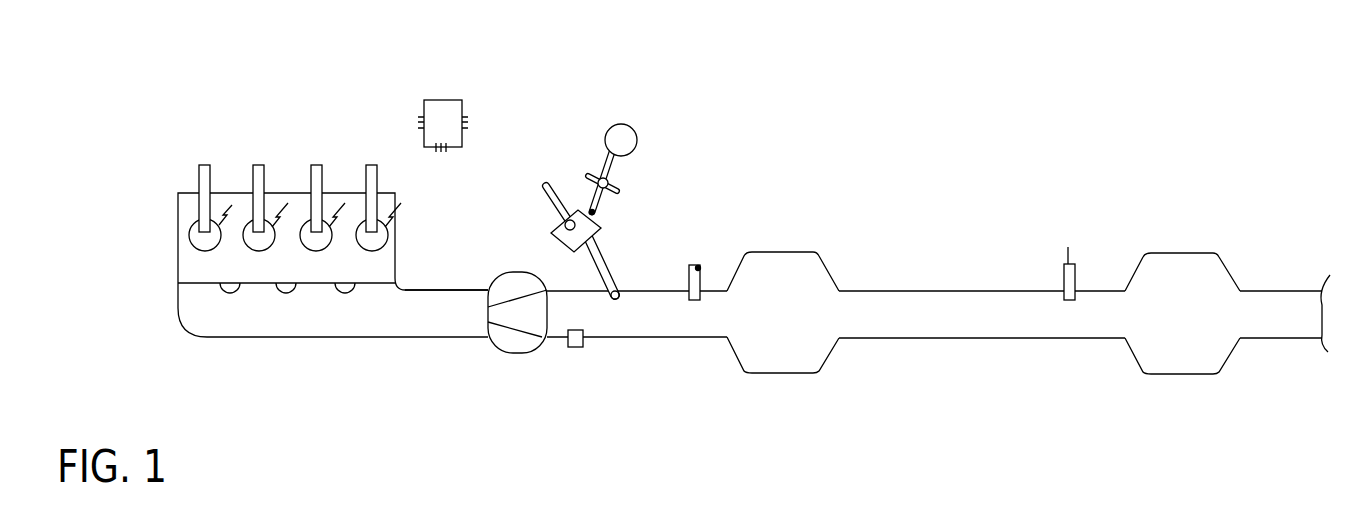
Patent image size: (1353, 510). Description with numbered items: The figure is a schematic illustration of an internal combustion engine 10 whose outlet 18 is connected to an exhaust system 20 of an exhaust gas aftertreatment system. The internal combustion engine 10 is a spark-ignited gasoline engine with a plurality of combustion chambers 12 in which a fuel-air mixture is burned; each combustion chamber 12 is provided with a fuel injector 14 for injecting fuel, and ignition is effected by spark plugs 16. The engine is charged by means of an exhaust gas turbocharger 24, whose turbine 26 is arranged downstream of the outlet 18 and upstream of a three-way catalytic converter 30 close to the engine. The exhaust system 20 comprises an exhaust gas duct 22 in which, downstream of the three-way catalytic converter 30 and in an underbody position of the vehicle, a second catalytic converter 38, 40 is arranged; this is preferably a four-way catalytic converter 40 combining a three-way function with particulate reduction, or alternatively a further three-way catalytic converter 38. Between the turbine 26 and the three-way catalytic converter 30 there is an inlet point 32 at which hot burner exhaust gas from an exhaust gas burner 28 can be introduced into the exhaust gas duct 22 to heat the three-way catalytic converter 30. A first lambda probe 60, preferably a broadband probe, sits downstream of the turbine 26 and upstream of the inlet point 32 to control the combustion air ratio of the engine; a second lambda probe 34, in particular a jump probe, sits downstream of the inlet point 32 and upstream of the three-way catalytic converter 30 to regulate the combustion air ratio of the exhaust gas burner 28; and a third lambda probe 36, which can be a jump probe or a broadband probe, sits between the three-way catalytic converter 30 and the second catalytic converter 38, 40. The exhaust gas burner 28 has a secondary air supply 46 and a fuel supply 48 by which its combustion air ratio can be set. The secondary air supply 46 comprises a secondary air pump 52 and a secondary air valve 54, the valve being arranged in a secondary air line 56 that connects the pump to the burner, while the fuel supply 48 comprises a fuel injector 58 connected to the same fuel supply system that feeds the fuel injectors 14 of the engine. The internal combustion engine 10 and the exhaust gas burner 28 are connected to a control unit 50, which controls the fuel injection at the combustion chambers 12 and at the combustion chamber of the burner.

The internal combustion engine 10 is at (152, 168).
The combustion chambers 12 is at (200, 240).
The fuel injector 14 is at (208, 180).
The spark plugs 16 is at (232, 207).
The outlet 18 is at (252, 315).
The exhaust system 20 is at (1092, 155).
The exhaust gas duct 22 is at (448, 302).
The exhaust gas turbocharger 24 is at (515, 273).
The turbine 26 is at (518, 352).
The exhaust gas burner 28 is at (596, 263).
The three-way catalytic converter 30 is at (804, 266).
The inlet point 32 is at (608, 291).
The second lambda probe 34 is at (698, 268).
The third lambda probe 36 is at (1100, 247).
The further three-way catalytic converter 38 is at (1184, 284).
The four-way catalytic converter 40 is at (1182, 267).
The secondary air supply 46 is at (592, 212).
The fuel supply 48 is at (570, 225).
The control unit 50 is at (445, 100).
The secondary air pump 52 is at (627, 125).
The secondary air valve 54 is at (603, 183).
The secondary air line 56 is at (603, 163).
The fuel injector 58 is at (546, 186).
The first lambda probe 60 is at (589, 371).